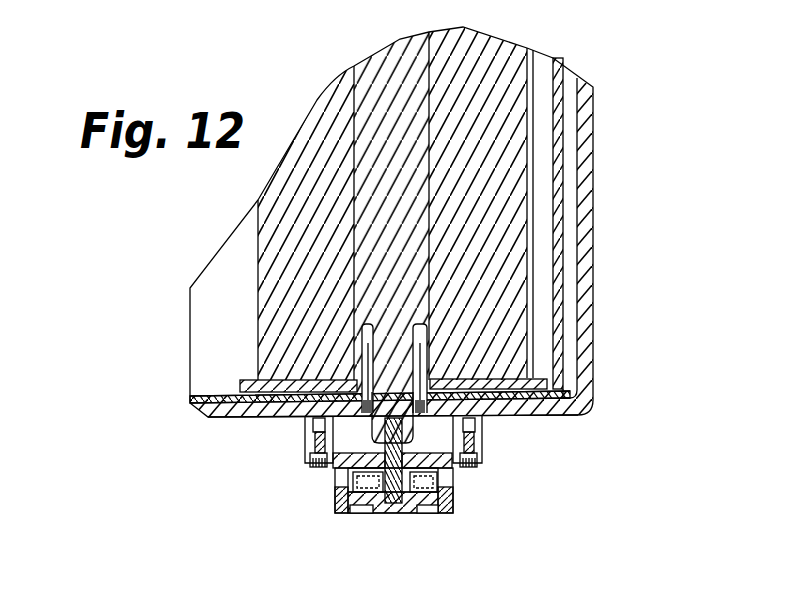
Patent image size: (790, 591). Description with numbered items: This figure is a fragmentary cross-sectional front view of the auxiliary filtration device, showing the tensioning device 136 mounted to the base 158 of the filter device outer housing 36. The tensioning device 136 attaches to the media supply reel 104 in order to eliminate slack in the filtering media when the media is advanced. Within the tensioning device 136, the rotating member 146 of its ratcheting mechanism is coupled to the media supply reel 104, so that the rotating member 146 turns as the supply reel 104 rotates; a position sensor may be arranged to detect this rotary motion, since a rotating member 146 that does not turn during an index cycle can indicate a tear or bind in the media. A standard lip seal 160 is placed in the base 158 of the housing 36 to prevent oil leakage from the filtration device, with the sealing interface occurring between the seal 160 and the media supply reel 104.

The outer housing 36 is at (595, 337).
The media supply reel 104 is at (432, 333).
The tensioning device 136 is at (338, 477).
The rotating member 146 is at (447, 473).
The base 158 is at (560, 417).
The lip seal 160 is at (415, 416).